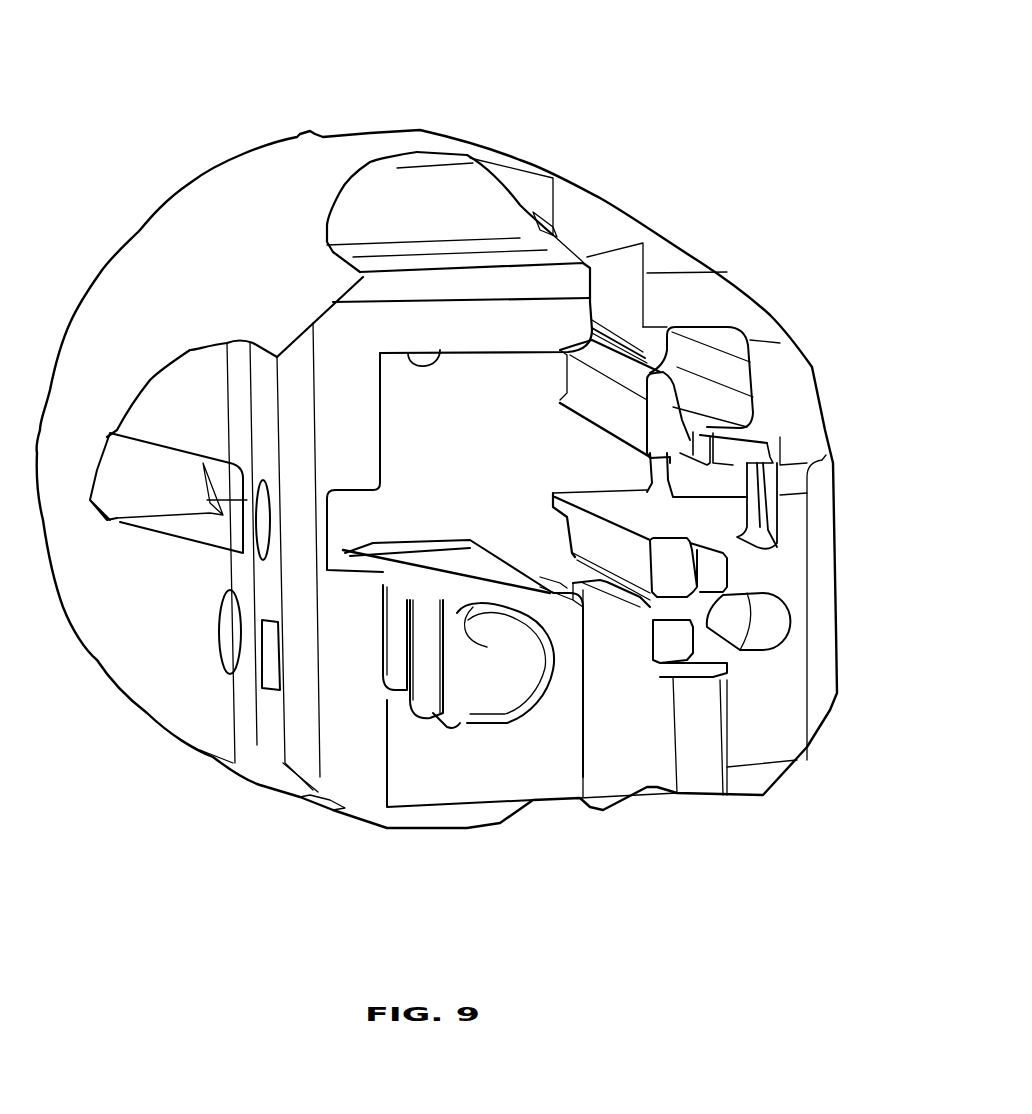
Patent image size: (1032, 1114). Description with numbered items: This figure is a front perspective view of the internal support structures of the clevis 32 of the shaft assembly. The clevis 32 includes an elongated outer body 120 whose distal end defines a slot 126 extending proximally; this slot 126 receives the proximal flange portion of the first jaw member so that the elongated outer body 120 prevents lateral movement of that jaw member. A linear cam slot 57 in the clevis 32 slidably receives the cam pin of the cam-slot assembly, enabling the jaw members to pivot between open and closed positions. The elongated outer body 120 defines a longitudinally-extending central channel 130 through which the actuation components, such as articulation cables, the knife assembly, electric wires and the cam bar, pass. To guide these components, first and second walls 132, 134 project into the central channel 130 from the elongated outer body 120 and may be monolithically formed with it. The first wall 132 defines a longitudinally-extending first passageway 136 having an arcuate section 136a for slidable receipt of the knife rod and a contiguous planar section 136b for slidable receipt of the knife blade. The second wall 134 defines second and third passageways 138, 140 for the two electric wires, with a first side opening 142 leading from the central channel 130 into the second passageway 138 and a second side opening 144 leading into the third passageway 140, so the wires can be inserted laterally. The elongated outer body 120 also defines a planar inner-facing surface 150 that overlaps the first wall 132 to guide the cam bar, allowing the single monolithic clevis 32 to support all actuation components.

The clevis 32 is at (650, 78).
The linear cam slot 57 is at (118, 516).
The elongated outer body 120 is at (113, 283).
The slot 126 is at (579, 184).
The central channel 130 is at (504, 380).
The first wall 132 is at (521, 793).
The second wall 134 is at (746, 755).
The first passageway 136 is at (461, 727).
The arcuate section 136a is at (513, 652).
The planar section 136b is at (440, 590).
The second passageway 138 is at (716, 372).
The third passageway 140 is at (766, 622).
The first side opening 142 is at (607, 324).
The second side opening 144 is at (632, 616).
The planar inner-facing surface 150 is at (440, 350).